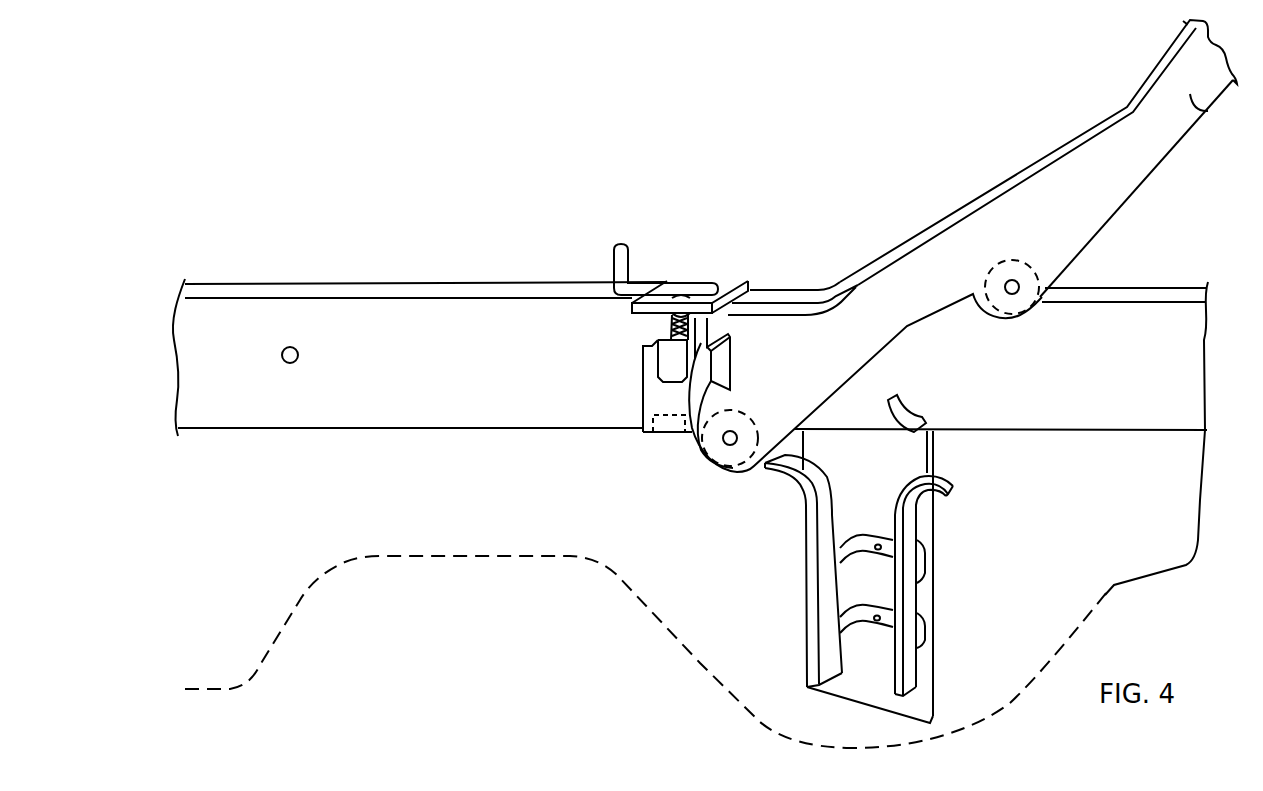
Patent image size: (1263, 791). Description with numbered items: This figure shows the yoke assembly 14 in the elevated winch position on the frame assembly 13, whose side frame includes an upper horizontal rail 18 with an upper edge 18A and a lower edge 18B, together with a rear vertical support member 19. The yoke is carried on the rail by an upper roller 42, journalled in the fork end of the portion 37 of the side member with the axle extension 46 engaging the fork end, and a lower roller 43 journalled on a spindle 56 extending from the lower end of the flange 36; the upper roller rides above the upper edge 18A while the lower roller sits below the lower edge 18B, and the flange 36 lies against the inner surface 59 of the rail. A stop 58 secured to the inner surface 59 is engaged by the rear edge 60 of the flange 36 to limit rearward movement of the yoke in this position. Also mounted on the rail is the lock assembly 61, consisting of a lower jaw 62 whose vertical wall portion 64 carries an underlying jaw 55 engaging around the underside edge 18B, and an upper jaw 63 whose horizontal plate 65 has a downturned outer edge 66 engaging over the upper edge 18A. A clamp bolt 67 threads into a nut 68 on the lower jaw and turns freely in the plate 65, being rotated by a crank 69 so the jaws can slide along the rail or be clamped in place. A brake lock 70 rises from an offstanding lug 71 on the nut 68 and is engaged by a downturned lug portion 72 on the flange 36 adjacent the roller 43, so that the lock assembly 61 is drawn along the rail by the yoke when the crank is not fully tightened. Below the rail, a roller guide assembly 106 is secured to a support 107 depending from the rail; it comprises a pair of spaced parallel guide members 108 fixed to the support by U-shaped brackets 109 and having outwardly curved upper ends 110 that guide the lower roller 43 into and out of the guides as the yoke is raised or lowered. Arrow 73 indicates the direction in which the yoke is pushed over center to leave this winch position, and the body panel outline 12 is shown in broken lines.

The vehicle body panel 12 is at (537, 556).
The frame assembly 13 is at (460, 411).
The yoke assembly 14 is at (1112, 80).
The upper substantially horizontal rail 18 is at (260, 327).
The upper side or edge of the rail 18A is at (345, 292).
The lower side or edge of the rail 18B is at (295, 428).
The rear vertical support member 19 is at (1162, 515).
The flange 36 is at (864, 278).
The portion of the side member 37 is at (1209, 108).
The upper roller 42 is at (1020, 275).
The lower roller 43 is at (740, 407).
The extension of the roller axle 46 is at (1020, 286).
The underlying jaw 55 is at (672, 434).
The spindle 56 is at (728, 446).
The stop 58 is at (907, 407).
The inner surface of the side rail 59 is at (1100, 422).
The rear edge of the flange 60 is at (845, 390).
The lock assembly 61 is at (697, 270).
The lower jaw 62 is at (647, 405).
The upper jaw 63 is at (727, 288).
The vertical wall portion 64 is at (645, 382).
The horizontal plate 65 is at (648, 306).
The downturned outer edge 66 is at (760, 287).
The screw threaded clamp bolt 67 is at (658, 330).
The nut 68 is at (677, 360).
The crank 69 is at (615, 254).
The brake lock 70 is at (715, 360).
The offstanding lug 71 is at (722, 445).
The downturned lug portion 72 is at (817, 308).
The arrow 73 is at (1158, 24).
The roller guide assembly 106 is at (802, 608).
The support 107 is at (937, 457).
The guide member 108 is at (827, 543).
The U-shaped bracket 109 is at (850, 547).
The outwardly curved upper end 110 is at (958, 483).